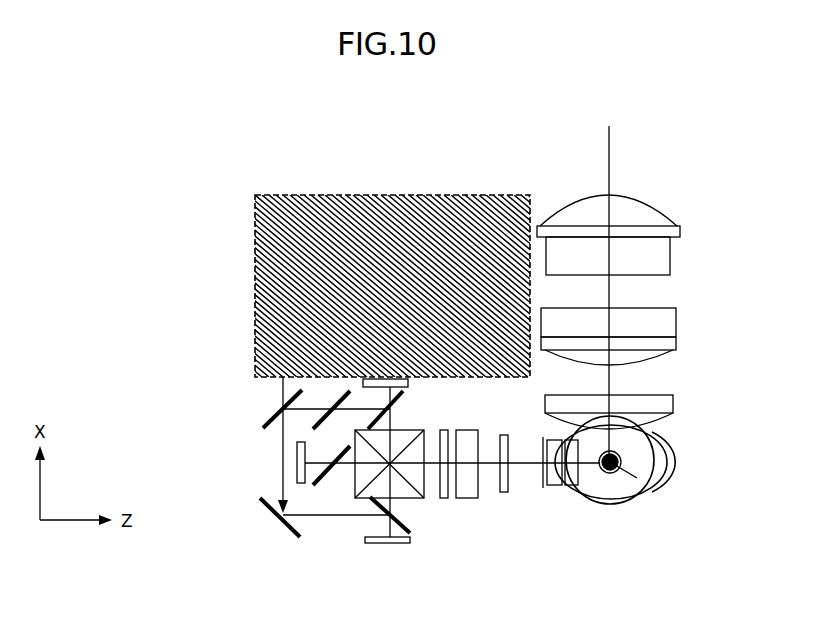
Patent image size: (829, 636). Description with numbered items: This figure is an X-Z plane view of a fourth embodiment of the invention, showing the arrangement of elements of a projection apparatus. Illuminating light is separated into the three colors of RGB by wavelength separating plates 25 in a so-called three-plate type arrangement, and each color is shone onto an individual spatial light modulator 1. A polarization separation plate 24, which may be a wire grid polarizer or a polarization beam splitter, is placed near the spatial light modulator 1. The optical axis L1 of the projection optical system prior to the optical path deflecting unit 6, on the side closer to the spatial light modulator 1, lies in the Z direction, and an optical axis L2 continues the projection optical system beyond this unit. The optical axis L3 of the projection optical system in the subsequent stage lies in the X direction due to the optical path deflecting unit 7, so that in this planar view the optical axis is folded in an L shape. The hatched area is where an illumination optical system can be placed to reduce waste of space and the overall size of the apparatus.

The wavelength separating plates 25 is at (338, 403).
The spatial light modulator 1 is at (365, 540).
The polarization separation plate 24 is at (406, 524).
The optical axis L1 is at (521, 463).
The optical path deflecting unit 6 is at (610, 505).
The optical axis L2 is at (637, 478).
The optical path deflecting unit 7 is at (667, 453).
The optical axis L3 is at (610, 293).